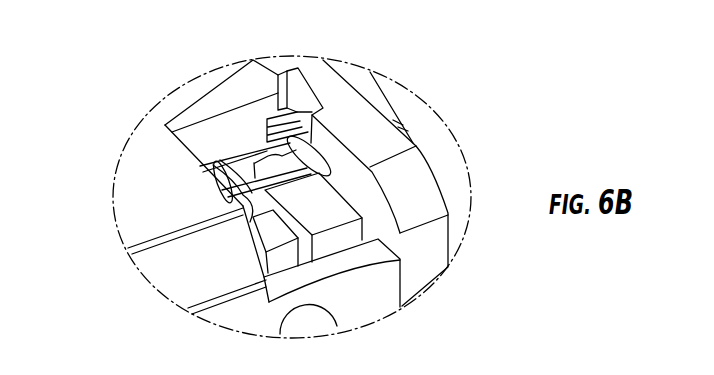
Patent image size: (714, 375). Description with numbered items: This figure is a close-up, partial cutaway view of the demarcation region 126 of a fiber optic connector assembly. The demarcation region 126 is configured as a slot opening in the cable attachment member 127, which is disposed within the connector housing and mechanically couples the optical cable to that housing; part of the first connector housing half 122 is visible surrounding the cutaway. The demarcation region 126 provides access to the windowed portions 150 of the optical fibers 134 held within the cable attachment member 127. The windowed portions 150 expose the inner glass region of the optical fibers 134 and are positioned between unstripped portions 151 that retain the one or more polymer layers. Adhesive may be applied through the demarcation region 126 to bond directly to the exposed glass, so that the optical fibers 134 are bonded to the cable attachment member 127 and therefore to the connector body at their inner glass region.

The first connector housing half 122 is at (150, 172).
The demarcation region 126 is at (295, 98).
The cable attachment member 127 is at (425, 187).
The optical fibers 134 is at (301, 194).
The windowed portions 150 is at (310, 188).
The unstripped portions 151 is at (249, 220).